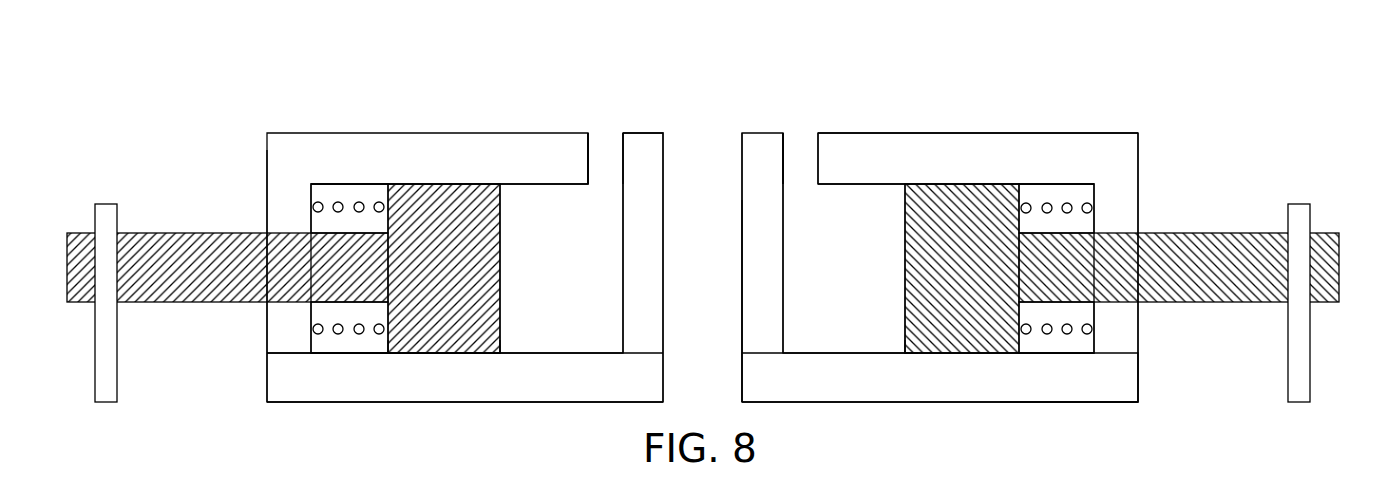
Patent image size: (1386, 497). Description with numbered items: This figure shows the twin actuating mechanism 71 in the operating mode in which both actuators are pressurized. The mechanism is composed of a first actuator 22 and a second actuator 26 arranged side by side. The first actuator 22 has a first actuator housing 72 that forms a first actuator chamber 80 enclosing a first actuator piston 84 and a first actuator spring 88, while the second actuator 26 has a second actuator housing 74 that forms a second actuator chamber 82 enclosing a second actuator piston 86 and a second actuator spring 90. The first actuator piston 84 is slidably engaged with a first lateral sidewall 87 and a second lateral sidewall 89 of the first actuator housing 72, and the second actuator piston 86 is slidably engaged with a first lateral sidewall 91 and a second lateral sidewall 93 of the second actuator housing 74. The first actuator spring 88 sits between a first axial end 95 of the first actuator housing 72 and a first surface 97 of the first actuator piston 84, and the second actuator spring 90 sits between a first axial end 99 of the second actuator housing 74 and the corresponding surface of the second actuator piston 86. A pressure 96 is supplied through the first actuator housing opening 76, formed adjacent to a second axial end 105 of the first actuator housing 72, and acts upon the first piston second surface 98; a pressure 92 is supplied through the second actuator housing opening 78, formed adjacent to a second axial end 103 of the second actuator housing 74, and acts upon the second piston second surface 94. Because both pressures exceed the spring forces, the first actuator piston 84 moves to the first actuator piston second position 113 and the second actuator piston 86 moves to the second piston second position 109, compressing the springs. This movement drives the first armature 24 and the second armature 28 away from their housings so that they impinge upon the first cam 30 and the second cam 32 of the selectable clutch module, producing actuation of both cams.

The twin actuating mechanism 71 is at (216, 119).
The first actuator 22 is at (295, 162).
The first armature 24 is at (192, 303).
The second actuator 26 is at (1110, 165).
The second armature 28 is at (1213, 303).
The first cam 30 is at (105, 392).
The second cam 32 is at (1302, 392).
The first actuator housing 72 is at (312, 383).
The second actuator housing 74 is at (1088, 384).
The first actuator housing opening 76 is at (590, 140).
The second actuator housing opening 78 is at (783, 140).
The first actuator chamber 80 is at (580, 333).
The second actuator chamber 82 is at (825, 333).
The first actuator piston 84 is at (440, 340).
The second actuator piston 86 is at (985, 340).
The first lateral sidewall 87 is at (423, 142).
The first actuator spring 88 is at (360, 202).
The second lateral sidewall 89 is at (356, 388).
The second actuator spring 90 is at (1045, 203).
The first lateral sidewall 91 is at (978, 142).
The pressure 92 is at (803, 180).
The second lateral sidewall 93 is at (1045, 384).
The second piston second surface 94 is at (905, 253).
The first axial end 95 is at (270, 193).
The pressure 96 is at (606, 169).
The first surface 97 is at (387, 357).
The first piston second surface 98 is at (502, 253).
The first axial end 99 is at (1140, 193).
The second axial end 103 is at (757, 320).
The second axial end 105 is at (650, 206).
The second piston second position 109 is at (908, 357).
The first actuator piston second position 113 is at (497, 353).